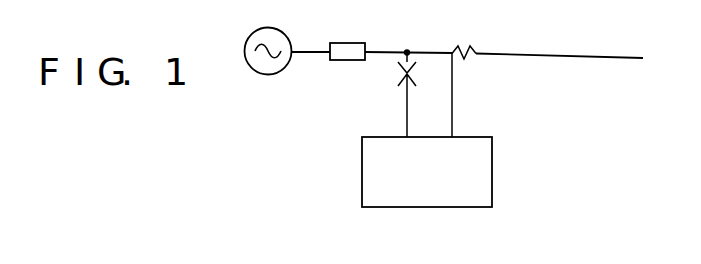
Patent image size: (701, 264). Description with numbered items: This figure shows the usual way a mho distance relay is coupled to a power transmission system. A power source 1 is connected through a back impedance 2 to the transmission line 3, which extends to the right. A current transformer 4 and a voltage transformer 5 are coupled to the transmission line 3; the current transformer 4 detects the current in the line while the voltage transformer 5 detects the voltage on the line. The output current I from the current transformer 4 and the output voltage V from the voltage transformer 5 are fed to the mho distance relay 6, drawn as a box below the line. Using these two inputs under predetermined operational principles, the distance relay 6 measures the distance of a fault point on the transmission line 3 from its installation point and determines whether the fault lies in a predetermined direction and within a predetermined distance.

The power source 1 is at (285, 33).
The back impedance 2 is at (349, 43).
The transmission line 3 is at (558, 57).
The current transformer 4 is at (458, 46).
The voltage transformer 5 is at (421, 60).
The mho distance relay 6 is at (492, 168).